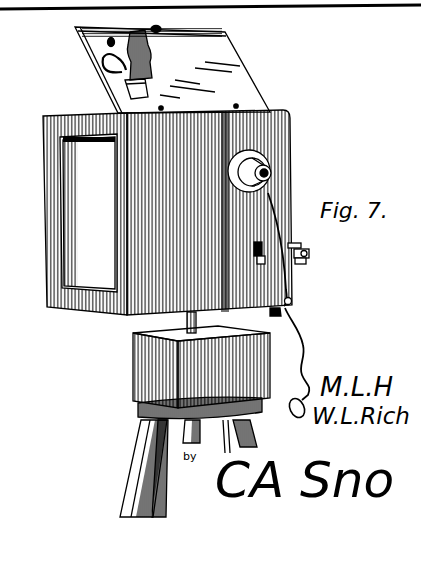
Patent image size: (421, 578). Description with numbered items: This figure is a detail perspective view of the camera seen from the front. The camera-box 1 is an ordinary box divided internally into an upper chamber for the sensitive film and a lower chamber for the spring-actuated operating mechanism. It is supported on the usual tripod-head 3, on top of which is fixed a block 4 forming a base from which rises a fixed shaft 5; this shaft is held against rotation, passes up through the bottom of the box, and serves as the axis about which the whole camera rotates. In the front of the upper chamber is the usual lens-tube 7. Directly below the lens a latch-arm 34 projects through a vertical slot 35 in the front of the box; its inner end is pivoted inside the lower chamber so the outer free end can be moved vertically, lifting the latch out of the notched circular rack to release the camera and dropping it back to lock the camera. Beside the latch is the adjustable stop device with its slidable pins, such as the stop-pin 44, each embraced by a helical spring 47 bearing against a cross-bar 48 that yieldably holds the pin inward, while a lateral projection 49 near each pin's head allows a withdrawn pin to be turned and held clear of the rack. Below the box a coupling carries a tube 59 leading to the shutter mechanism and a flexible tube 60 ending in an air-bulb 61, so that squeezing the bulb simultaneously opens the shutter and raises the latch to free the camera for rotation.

The camera-box 1 is at (100, 310).
The tripod-head 3 is at (140, 411).
The block 4 is at (133, 363).
The fixed shaft 5 is at (187, 322).
The lens-tube 7 is at (271, 172).
The latch-arm 34 is at (259, 259).
The vertical slot 35 is at (253, 244).
The stop-pin 44 is at (300, 246).
The helical spring 47 is at (163, 38).
The cross-bar 48 is at (106, 44).
The lateral projection 49 is at (152, 68).
The tube 59 is at (292, 300).
The flexible tube 60 is at (294, 344).
The air-bulb 61 is at (296, 399).